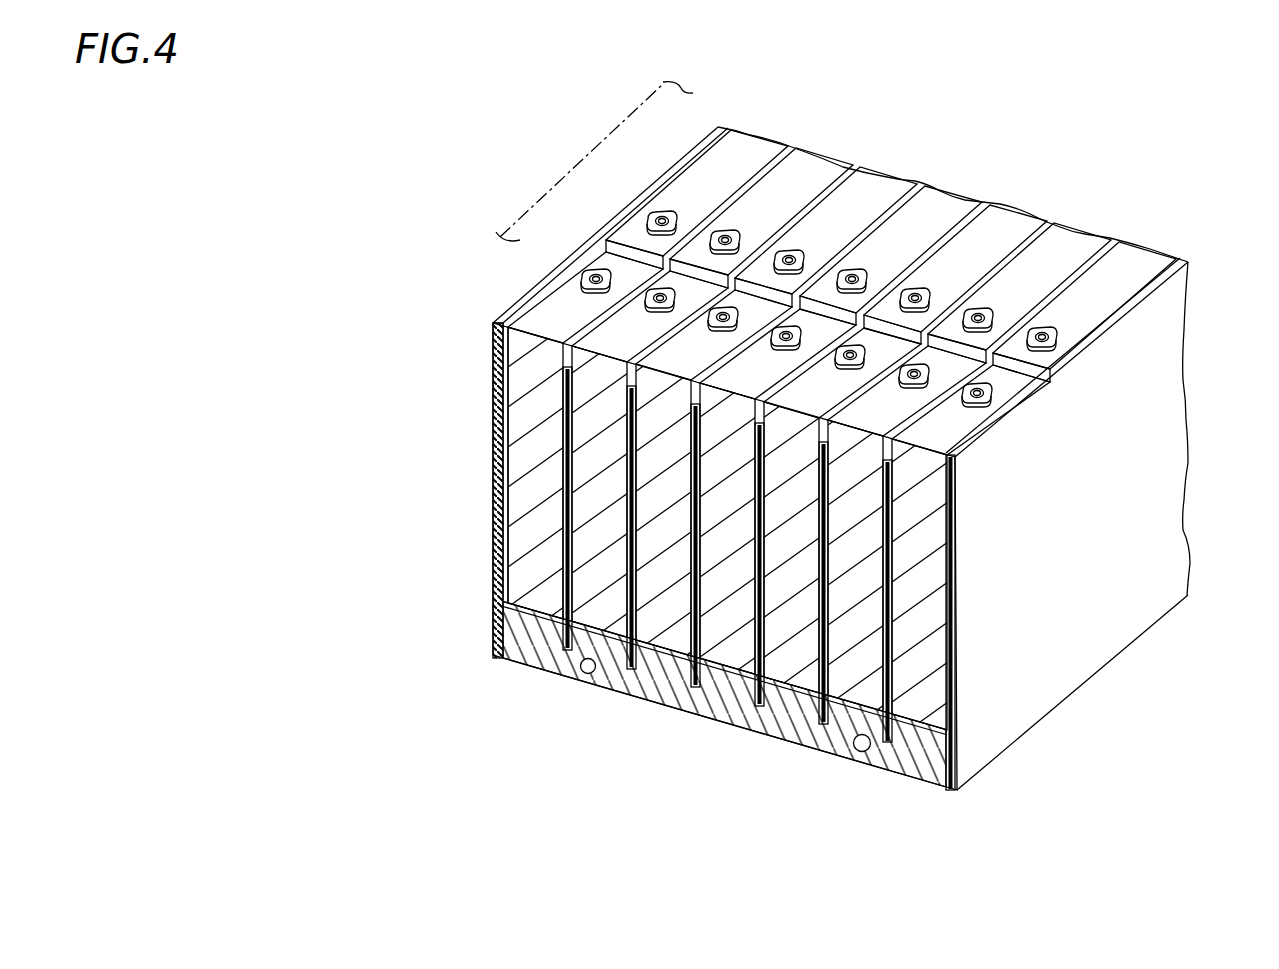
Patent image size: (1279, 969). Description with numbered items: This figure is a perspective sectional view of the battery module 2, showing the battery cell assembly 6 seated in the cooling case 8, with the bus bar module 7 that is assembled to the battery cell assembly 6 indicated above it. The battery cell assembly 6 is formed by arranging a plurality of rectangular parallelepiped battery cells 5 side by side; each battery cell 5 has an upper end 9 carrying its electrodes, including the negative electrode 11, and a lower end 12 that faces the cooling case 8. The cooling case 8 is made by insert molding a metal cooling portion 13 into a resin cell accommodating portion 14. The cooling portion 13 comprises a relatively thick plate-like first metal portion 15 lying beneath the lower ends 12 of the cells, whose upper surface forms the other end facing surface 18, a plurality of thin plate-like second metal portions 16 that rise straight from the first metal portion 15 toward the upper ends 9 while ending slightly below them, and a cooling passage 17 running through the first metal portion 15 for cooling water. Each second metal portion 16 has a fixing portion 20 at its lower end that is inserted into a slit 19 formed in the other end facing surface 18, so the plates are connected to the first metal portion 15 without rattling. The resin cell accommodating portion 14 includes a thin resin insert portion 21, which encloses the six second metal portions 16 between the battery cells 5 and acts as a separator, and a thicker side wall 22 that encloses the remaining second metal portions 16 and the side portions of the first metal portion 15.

The battery module 2 is at (398, 140).
The battery cell 5 is at (533, 318).
The battery cell assembly 6 is at (938, 221).
The bus bar module 7 is at (560, 162).
The cooling case 8 is at (1127, 826).
The upper end 9 is at (953, 425).
The negative electrode 11 is at (1010, 385).
The lower end 12 is at (883, 765).
The cooling portion 13 is at (895, 778).
The cell accommodating portion 14 is at (1040, 655).
The first metal portion 15 is at (657, 686).
The second metal portion 16 is at (562, 508).
The cooling passage 17 is at (587, 672).
The other end facing surface 18 is at (537, 600).
The slit 19 is at (563, 655).
The fixing portion 20 is at (724, 666).
The resin insert portion 21 is at (562, 480).
The side wall 22 is at (1169, 538).